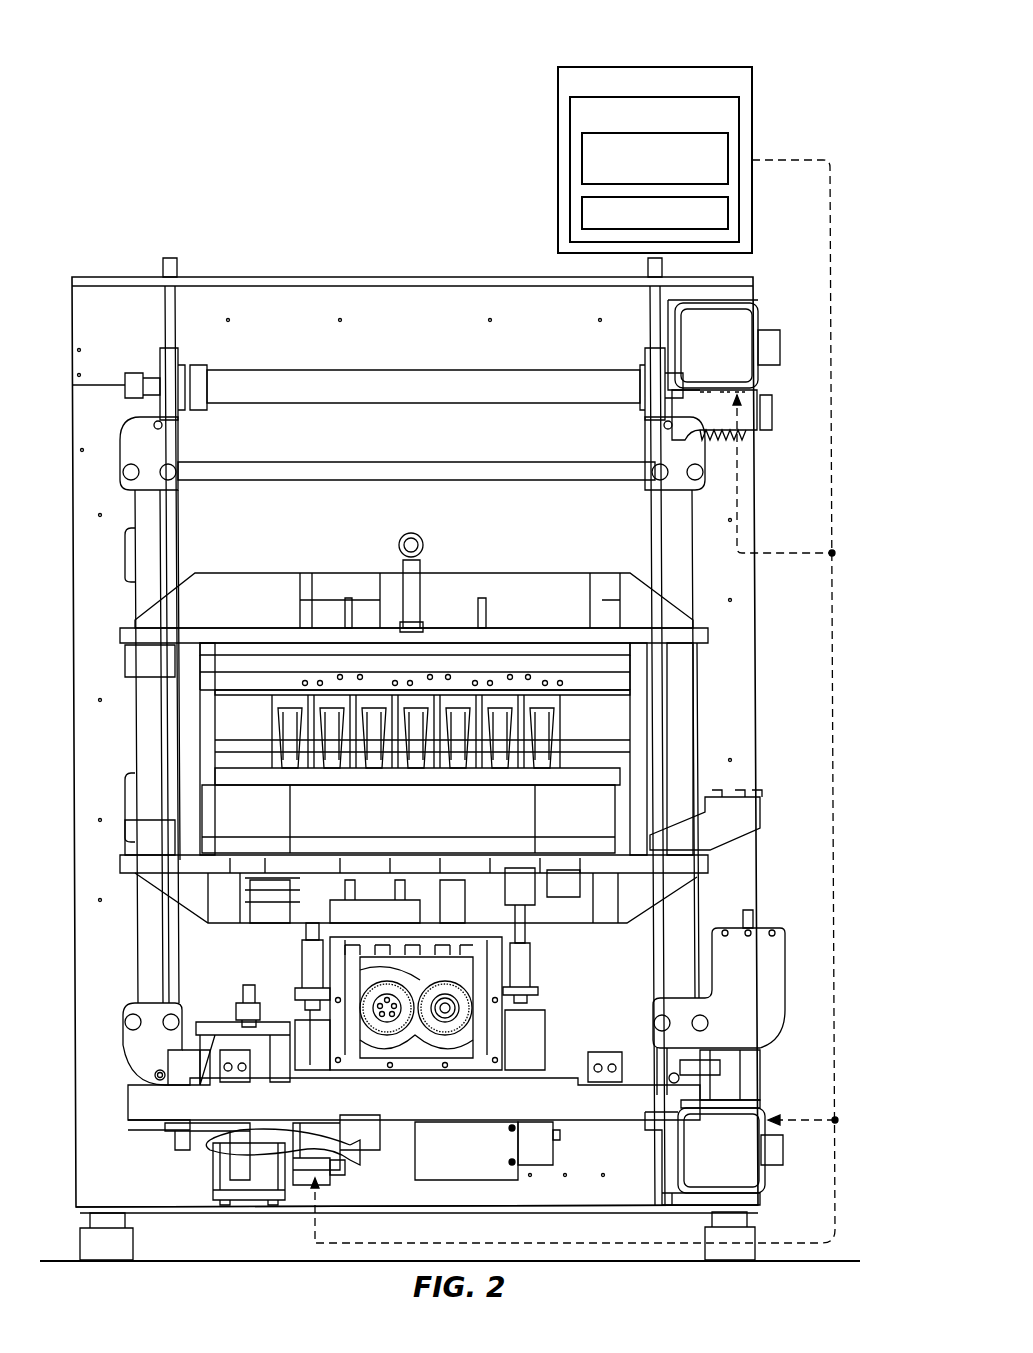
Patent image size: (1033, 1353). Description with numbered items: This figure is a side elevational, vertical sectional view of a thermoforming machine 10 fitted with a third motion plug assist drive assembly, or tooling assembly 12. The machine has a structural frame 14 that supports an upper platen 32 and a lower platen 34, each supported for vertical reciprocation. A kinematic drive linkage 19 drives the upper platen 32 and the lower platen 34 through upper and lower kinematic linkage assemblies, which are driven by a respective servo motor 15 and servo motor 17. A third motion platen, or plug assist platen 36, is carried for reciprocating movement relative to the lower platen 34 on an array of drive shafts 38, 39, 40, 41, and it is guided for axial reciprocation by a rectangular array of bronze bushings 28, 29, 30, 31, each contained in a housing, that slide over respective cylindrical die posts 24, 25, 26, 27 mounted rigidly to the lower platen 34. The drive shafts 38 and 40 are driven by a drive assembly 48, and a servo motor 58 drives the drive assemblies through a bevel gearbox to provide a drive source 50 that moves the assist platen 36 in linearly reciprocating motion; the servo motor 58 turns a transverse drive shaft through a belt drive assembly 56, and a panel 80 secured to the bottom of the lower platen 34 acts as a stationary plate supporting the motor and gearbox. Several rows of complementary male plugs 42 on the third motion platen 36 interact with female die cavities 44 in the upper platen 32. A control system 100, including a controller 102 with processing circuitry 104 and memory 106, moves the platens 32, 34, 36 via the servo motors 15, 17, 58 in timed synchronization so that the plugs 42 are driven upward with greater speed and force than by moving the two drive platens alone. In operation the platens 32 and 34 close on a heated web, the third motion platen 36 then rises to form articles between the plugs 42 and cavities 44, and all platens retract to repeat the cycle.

The thermoforming machine 10 is at (175, 178).
The tooling assembly 12 is at (285, 993).
The structural frame 14 is at (120, 275).
The servo motor 15 is at (778, 383).
The servo motor 17 is at (780, 1178).
The kinematic drive linkage 19 is at (778, 292).
The die post 24 is at (313, 967).
The die post 25 is at (520, 968).
The die post 26 is at (257, 1017).
The die post 27 is at (577, 1019).
The bronze bushing 28 is at (305, 960).
The bronze bushing 29 is at (525, 953).
The bronze bushing 30 is at (260, 994).
The bronze bushing 31 is at (581, 935).
The upper platen 32 is at (185, 595).
The lower platen 34 is at (195, 905).
The third motion platen 36 is at (325, 790).
The drive shaft 38 is at (184, 749).
The drive shaft 39 is at (290, 812).
The drive shaft 40 is at (648, 749).
The drive shaft 41 is at (535, 812).
The male plug 42 is at (290, 705).
The female die cavity 44 is at (300, 705).
The drive assembly 48 is at (455, 1060).
The drive source 50 is at (305, 1028).
The belt drive assembly 56 is at (558, 1153).
The servo motor 58 is at (325, 1165).
The panel 80 is at (490, 1160).
The control system 100 is at (558, 83).
The controller 102 is at (570, 116).
The processing circuitry 104 is at (582, 157).
The memory 106 is at (582, 212).